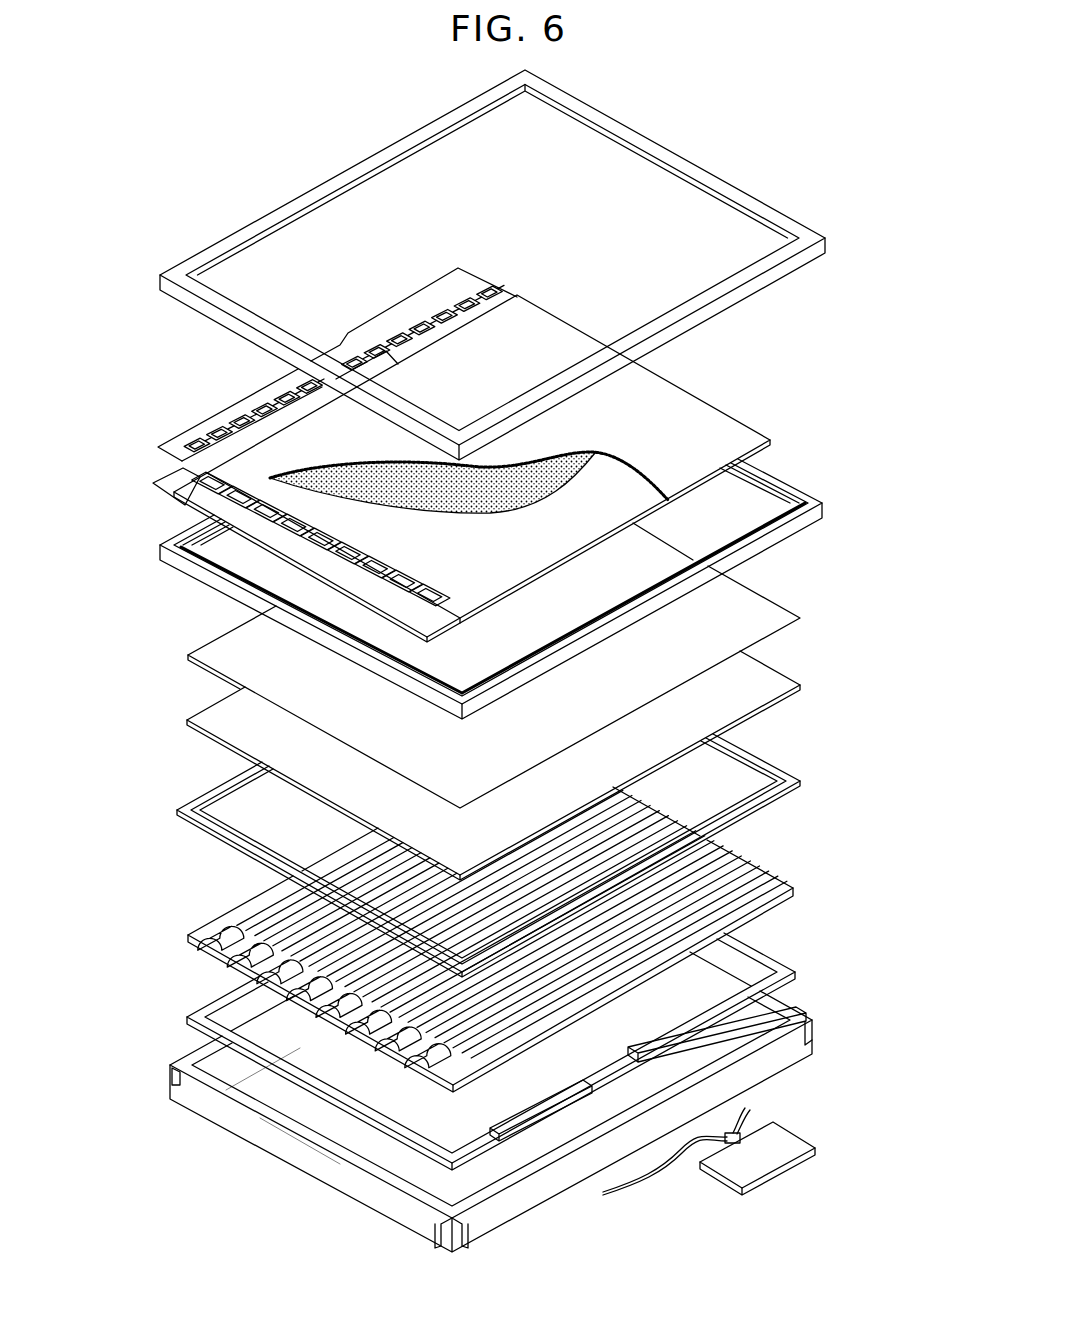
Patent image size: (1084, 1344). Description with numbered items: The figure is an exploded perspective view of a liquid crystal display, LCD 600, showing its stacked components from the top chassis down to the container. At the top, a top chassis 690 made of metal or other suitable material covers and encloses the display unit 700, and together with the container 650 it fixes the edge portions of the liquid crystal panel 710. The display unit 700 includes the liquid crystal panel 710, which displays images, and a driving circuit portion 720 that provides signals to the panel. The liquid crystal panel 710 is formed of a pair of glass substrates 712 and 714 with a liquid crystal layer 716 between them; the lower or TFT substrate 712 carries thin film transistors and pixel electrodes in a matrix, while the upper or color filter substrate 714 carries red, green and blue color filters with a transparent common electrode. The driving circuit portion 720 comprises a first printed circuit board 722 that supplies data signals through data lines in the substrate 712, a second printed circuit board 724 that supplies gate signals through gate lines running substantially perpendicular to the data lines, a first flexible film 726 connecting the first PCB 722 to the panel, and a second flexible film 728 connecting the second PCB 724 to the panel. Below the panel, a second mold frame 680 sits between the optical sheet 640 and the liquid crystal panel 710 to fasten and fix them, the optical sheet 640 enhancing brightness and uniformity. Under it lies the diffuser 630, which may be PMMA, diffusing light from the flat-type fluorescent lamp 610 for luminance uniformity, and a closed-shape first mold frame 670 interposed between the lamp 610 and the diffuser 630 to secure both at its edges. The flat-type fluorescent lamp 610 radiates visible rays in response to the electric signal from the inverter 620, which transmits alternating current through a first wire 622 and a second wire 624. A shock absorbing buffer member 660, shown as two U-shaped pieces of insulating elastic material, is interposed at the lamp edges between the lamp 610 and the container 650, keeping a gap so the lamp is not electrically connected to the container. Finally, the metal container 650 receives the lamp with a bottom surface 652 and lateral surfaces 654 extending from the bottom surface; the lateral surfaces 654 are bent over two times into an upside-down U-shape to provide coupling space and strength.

The LCD 600 is at (363, 128).
The top chassis 690 is at (213, 233).
The display unit 700 is at (315, 342).
The first printed circuit board 722 is at (363, 333).
The first flexible film 726 is at (423, 323).
The driving circuit portion 720 is at (251, 515).
The second printed circuit board 724 is at (187, 495).
The second flexible film 728 is at (165, 533).
The liquid crystal panel 710 is at (521, 468).
The glass substrate 712 is at (543, 550).
The glass substrate 714 is at (685, 477).
The liquid crystal layer 716 is at (572, 458).
The second mold frame 680 is at (823, 532).
The optical sheet 640 is at (197, 630).
The diffuser 630 is at (197, 693).
The first mold frame 670 is at (193, 783).
The flat-type fluorescent lamp 610 is at (193, 912).
The buffer member 660 is at (193, 993).
The container 650 is at (461, 1102).
The bottom surface 652 is at (287, 1107).
The lateral surfaces 654 is at (305, 1147).
The inverter 620 is at (727, 1163).
The first wire 622 is at (620, 1182).
The second wire 624 is at (745, 1108).